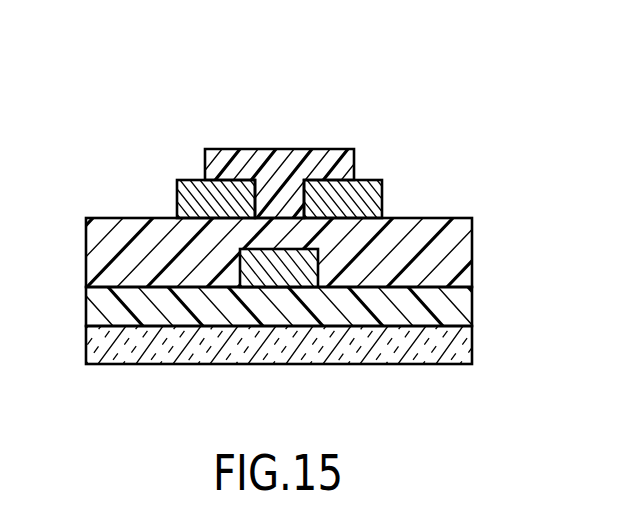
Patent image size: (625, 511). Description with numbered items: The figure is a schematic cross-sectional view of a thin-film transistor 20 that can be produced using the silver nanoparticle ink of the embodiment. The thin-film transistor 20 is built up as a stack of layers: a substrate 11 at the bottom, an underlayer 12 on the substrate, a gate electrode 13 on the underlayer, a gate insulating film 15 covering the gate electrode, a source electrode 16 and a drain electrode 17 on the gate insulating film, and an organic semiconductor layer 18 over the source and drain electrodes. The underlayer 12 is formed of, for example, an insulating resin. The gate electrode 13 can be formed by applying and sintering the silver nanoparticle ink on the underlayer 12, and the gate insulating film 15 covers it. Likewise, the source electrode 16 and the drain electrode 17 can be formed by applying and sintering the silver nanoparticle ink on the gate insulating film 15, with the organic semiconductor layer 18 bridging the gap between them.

The thin-film transistor 20 is at (392, 116).
The substrate 11 is at (453, 345).
The underlayer 12 is at (453, 306).
The gate electrode 13 is at (255, 269).
The gate insulating film 15 is at (452, 255).
The source electrode 16 is at (192, 200).
The drain electrode 17 is at (381, 198).
The organic semiconductor layer 18 is at (354, 164).